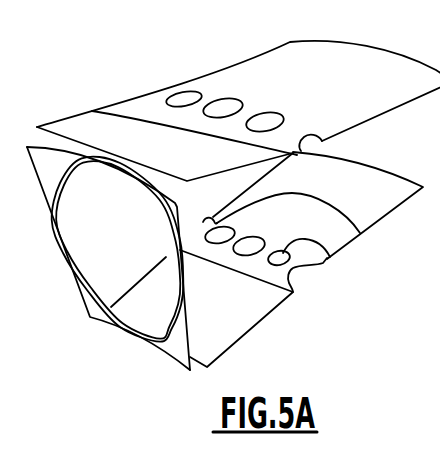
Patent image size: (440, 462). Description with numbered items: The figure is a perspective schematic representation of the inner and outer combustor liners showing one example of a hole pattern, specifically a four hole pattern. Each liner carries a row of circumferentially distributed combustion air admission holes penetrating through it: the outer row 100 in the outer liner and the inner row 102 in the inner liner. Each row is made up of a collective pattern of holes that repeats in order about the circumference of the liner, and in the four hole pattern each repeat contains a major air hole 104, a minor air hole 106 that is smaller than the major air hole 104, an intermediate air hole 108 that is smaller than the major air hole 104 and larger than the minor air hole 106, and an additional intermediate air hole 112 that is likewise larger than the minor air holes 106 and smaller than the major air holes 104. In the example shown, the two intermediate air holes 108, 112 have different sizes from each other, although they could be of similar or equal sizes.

The outer row of combustion air holes 100 is at (142, 85).
The inner row of combustion air holes 102 is at (341, 288).
The major air hole 104 is at (234, 104).
The minor air hole 106 is at (167, 92).
The intermediate air hole 108 is at (191, 92).
The additional intermediate air hole 112 is at (279, 118).